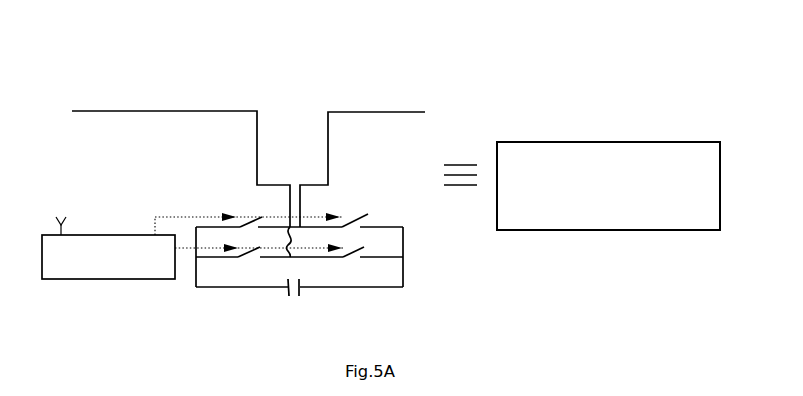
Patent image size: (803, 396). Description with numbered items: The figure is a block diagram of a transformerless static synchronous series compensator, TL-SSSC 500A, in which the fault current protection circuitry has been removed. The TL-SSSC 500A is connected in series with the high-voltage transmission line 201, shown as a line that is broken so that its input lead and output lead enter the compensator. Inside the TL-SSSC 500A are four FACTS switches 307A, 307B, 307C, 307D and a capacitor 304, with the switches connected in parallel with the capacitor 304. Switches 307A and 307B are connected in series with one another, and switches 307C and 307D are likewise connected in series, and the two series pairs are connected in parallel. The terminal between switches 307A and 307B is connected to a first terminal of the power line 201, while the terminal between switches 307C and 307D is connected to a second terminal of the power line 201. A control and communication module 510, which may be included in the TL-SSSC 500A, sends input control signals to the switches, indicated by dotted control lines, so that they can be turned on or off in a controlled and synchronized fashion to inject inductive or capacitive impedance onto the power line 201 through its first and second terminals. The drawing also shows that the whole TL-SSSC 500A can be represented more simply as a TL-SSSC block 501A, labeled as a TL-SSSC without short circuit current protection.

The HV transmission line 201 is at (392, 110).
The transformerless SSSC 500A is at (518, 75).
The TL-SSSC block 501A is at (553, 142).
The FACTS switch 307A is at (261, 258).
The FACTS switch 307B is at (362, 248).
The FACTS switch 307C is at (258, 218).
The FACTS switch 307D is at (368, 214).
The capacitor 304 is at (292, 296).
The control and communication module 510 is at (113, 280).